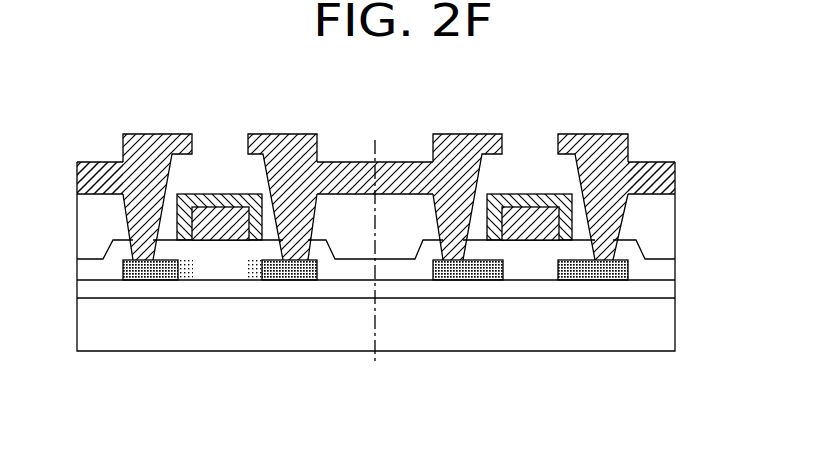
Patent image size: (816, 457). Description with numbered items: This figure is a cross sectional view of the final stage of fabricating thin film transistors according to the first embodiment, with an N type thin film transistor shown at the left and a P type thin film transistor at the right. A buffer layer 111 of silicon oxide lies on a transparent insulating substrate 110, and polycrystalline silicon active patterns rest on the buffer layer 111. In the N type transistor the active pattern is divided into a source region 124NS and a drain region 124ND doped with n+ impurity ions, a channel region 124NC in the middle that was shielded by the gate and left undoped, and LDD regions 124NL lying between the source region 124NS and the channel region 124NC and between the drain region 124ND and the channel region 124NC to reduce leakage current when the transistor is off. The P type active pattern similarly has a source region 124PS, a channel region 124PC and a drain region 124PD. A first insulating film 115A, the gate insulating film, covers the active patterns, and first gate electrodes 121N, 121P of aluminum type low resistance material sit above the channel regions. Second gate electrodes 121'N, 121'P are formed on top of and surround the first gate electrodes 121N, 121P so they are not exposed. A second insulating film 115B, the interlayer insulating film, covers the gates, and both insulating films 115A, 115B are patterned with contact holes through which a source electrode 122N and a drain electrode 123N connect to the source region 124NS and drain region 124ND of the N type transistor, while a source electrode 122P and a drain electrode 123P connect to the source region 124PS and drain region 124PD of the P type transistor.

The substrate 110 is at (668, 318).
The buffer layer 111 is at (668, 290).
The first insulating film 115A is at (668, 265).
The second insulating film 115B is at (668, 227).
The first gate electrode 121N is at (205, 207).
The second gate electrode 121'N is at (227, 155).
The source electrode 122N is at (152, 133).
The drain electrode 123N is at (307, 133).
The source region 124NS is at (133, 278).
The LDD region 124NL is at (185, 278).
The channel region 124NC is at (218, 275).
The drain region 124ND is at (308, 276).
The first gate electrode 121P is at (545, 207).
The second gate electrode 121'P is at (523, 155).
The source electrode 122P is at (443, 133).
The drain electrode 123P is at (602, 133).
The source region 124PS is at (460, 278).
The channel region 124PC is at (528, 278).
The drain region 124PD is at (600, 278).